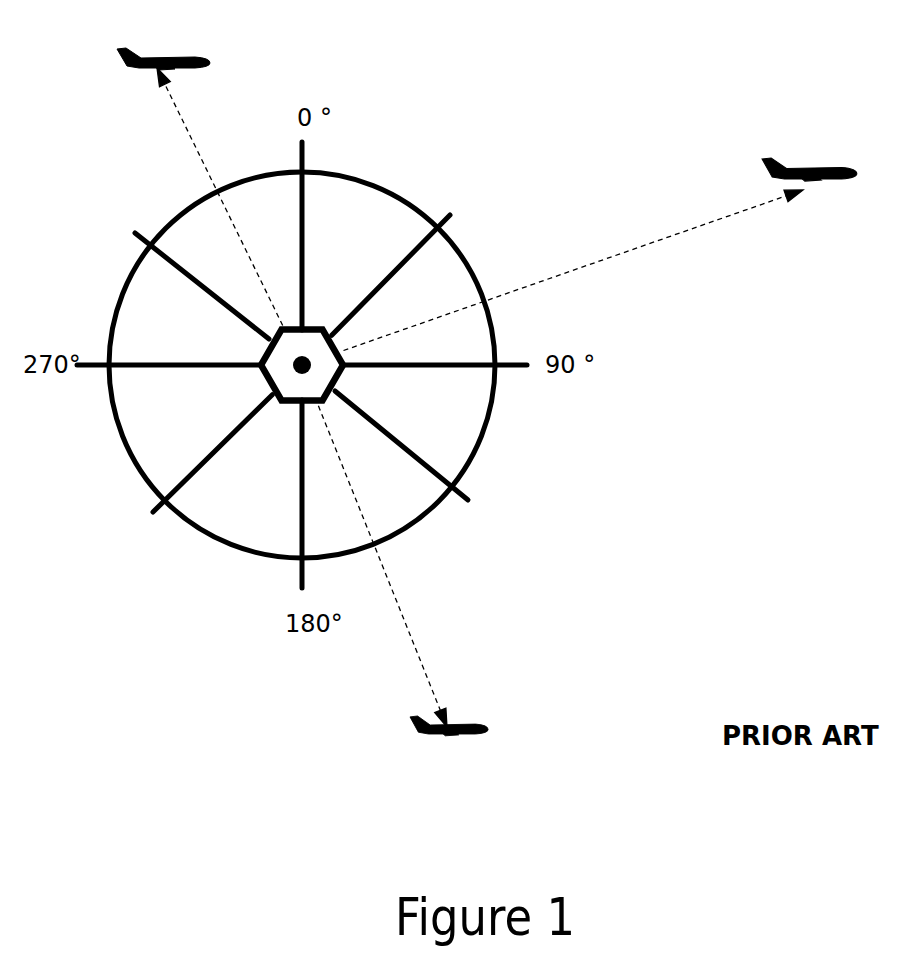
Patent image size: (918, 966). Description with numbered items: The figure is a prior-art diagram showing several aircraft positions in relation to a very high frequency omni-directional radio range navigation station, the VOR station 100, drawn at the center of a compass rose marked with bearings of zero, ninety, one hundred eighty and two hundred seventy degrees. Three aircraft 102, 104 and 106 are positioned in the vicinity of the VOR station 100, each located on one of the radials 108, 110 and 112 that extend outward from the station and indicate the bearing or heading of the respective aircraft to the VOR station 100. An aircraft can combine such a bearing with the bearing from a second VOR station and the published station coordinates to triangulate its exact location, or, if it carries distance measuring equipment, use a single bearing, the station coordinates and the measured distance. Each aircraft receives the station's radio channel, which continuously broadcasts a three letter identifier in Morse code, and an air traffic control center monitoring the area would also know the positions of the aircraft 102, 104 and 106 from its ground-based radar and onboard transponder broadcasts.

The VOR navigation station 100 is at (268, 383).
The aircraft 102 is at (181, 53).
The aircraft 104 is at (838, 163).
The aircraft 106 is at (443, 737).
The radial 108 is at (163, 88).
The radial 110 is at (713, 220).
The radial 112 is at (398, 600).